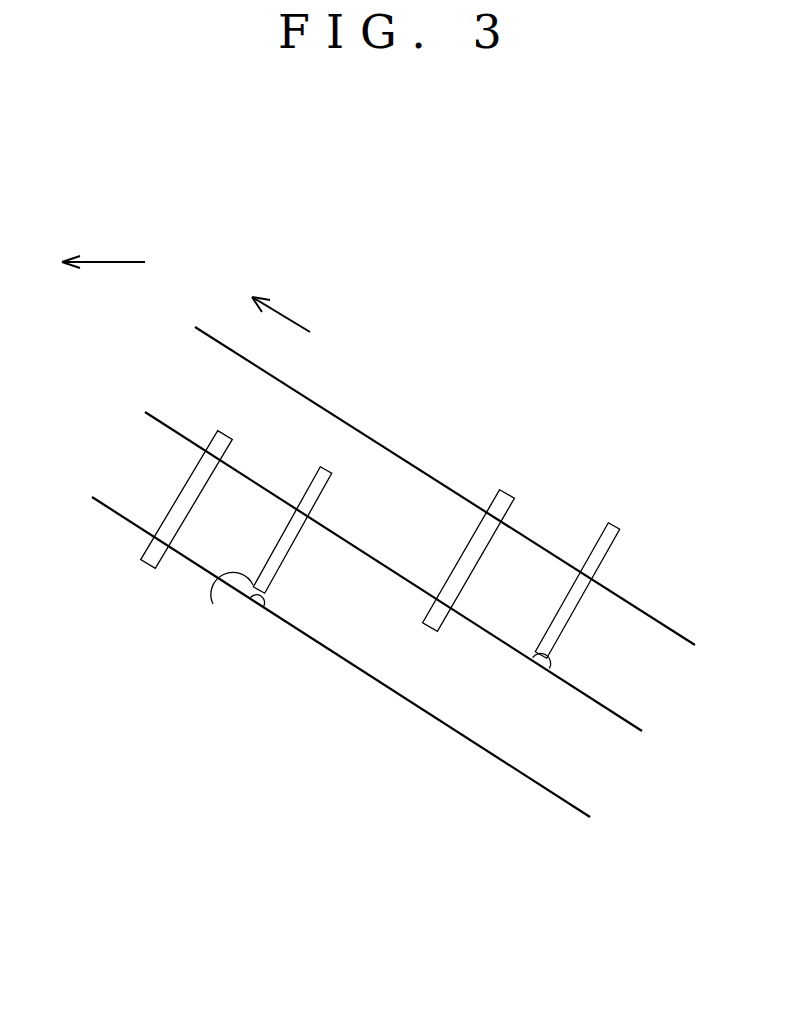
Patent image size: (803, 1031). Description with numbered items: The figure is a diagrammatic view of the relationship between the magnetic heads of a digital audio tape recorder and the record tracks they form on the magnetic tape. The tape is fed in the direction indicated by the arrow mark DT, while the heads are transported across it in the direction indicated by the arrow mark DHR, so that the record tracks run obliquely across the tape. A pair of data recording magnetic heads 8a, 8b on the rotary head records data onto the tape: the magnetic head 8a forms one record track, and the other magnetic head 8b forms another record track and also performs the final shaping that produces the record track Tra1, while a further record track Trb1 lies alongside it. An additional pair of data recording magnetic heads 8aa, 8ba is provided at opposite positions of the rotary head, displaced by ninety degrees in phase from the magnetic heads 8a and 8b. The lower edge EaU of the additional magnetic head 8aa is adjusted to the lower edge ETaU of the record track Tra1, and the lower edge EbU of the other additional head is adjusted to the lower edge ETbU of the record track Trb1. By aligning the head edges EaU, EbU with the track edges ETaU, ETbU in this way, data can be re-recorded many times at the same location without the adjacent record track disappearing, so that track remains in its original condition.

The magnetic head 8a is at (140, 564).
The additional data recording magnetic head 8aa is at (212, 607).
The magnetic head 8b is at (506, 490).
The additional data recording magnetic head 8ba is at (614, 527).
The record track Tra1 is at (110, 492).
The record track Trb1 is at (406, 478).
The tape feeding direction DT is at (103, 242).
The direction of transportation of the magnetic heads DHR is at (295, 303).
The lower edge of the magnetic head EaU is at (265, 607).
The lower edge of the magnetic head EbU is at (549, 669).
The lower edge of the record track ETaU is at (390, 690).
The lower edge of the record track ETbU is at (607, 710).